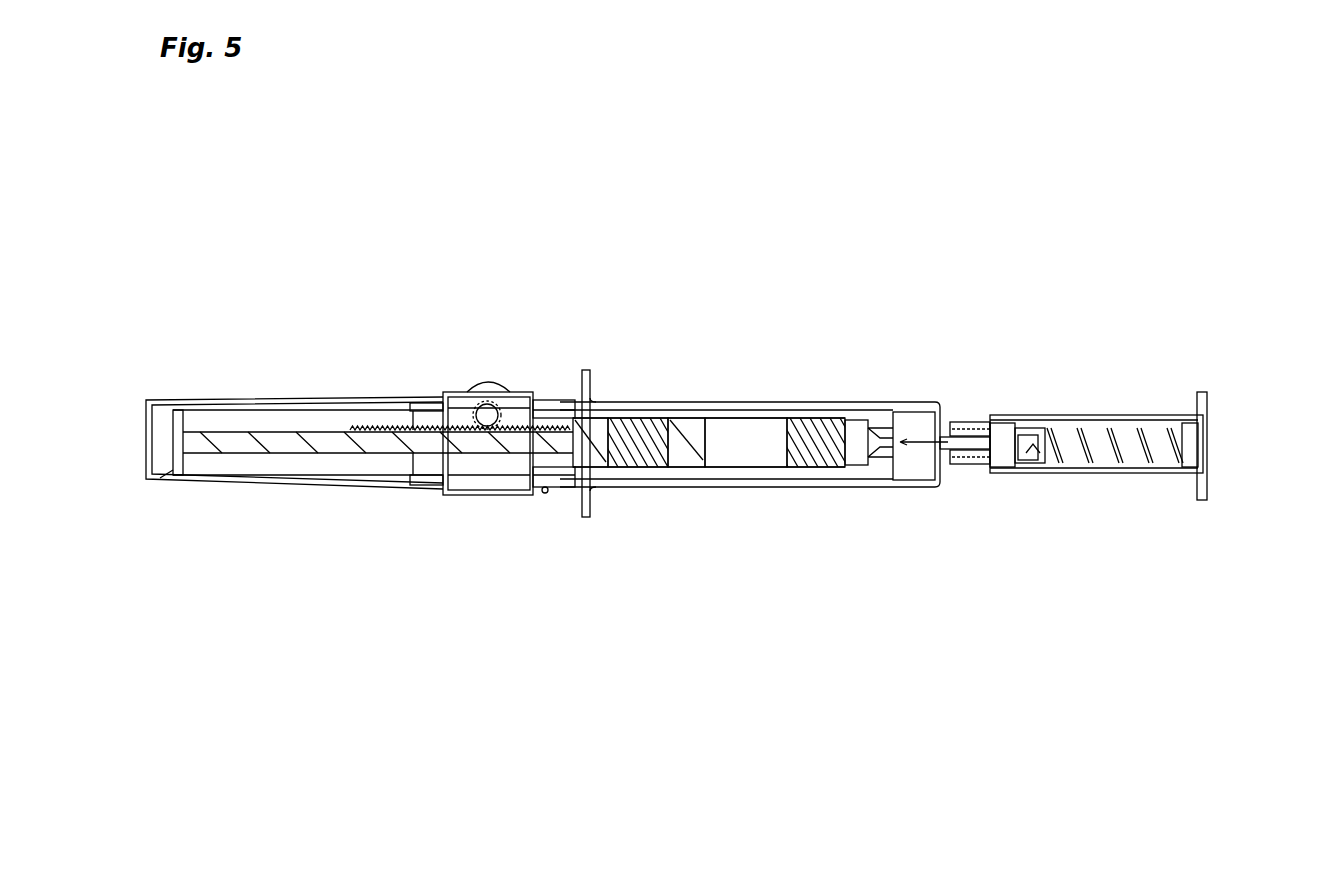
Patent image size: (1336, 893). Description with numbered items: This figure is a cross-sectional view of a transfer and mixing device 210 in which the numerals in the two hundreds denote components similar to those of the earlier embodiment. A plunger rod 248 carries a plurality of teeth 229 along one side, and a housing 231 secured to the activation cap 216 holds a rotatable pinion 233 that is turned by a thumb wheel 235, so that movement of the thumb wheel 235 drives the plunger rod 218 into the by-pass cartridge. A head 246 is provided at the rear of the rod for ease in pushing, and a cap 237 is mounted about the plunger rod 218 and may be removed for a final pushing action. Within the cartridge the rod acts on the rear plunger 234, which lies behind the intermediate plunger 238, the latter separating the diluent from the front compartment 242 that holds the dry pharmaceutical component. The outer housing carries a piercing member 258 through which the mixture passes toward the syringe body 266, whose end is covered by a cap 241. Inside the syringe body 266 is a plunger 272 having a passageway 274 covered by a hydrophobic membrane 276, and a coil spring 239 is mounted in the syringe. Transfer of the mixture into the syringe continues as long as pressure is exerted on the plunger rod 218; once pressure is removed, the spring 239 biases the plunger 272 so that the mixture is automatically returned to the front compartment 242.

The transfer and mixing device 210 is at (776, 281).
The cap 237 is at (190, 400).
The plunger rod 218 is at (258, 414).
The head 246 is at (173, 470).
The plunger rod 248 is at (290, 445).
The teeth 229 is at (358, 430).
The housing 231 is at (465, 492).
The thumb wheel 235 is at (482, 382).
The pinion 233 is at (499, 407).
The activation cap 216 is at (543, 493).
The intermediate plunger 238 is at (688, 456).
The rear plunger 234 is at (607, 456).
The front compartment 242 is at (770, 460).
The piercing member 258 is at (921, 440).
The hydrophobic membrane 276 is at (1015, 450).
The syringe body 266 is at (1065, 418).
The plunger 272 is at (1028, 424).
The passageway 274 is at (1041, 464).
The coil spring 239 is at (1122, 462).
The cap 241 is at (1208, 447).